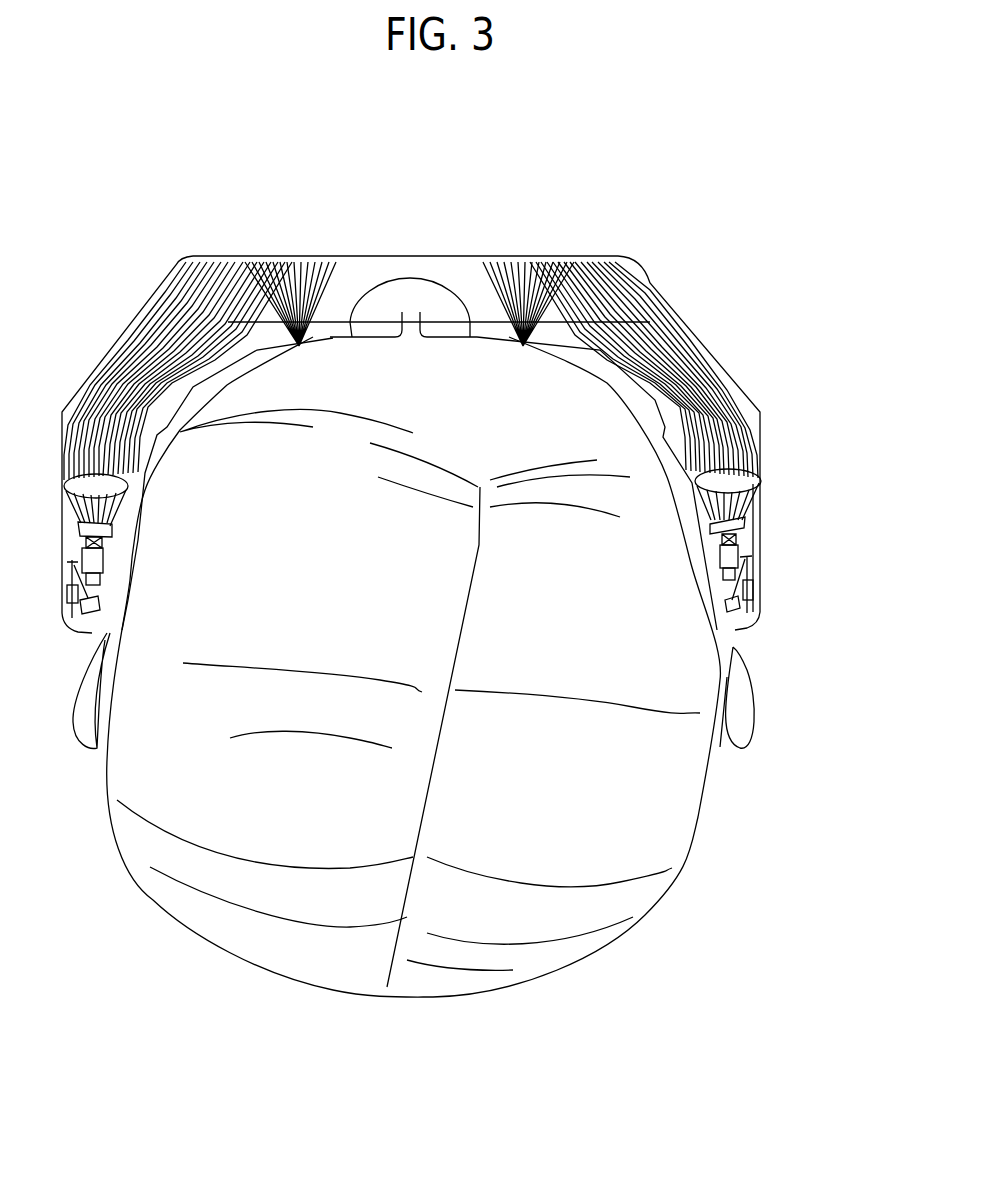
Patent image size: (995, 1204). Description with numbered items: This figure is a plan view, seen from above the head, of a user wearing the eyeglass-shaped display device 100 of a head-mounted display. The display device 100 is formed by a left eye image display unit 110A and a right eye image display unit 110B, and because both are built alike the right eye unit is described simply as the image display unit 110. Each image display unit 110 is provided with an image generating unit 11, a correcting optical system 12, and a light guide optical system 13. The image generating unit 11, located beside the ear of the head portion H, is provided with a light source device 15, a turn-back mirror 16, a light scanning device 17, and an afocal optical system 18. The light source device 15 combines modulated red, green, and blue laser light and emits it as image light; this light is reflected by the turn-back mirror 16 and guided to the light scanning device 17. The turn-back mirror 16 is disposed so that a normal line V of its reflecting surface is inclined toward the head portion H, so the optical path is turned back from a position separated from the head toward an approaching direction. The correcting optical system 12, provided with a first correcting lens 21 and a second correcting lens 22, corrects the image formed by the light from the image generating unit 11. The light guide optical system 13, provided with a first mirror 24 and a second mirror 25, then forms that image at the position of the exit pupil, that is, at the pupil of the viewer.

The display device 100 is at (466, 398).
The left eye image display unit 110A is at (278, 238).
The right eye image display unit 110B is at (634, 313).
The image display unit 110 is at (424, 314).
The second mirror 25 is at (506, 262).
The light guide optical system 13 is at (663, 270).
The first mirror 24 is at (713, 373).
The second correcting lens 22 is at (757, 486).
The first correcting lens 21 is at (742, 528).
The correcting optical system 12 is at (782, 491).
The afocal optical system 18 is at (740, 552).
The turn-back mirror 16 is at (748, 560).
The image generating unit 11 is at (787, 604).
The light source device 15 is at (752, 604).
The light scanning device 17 is at (742, 627).
The normal line V is at (755, 695).
The head portion H is at (340, 982).